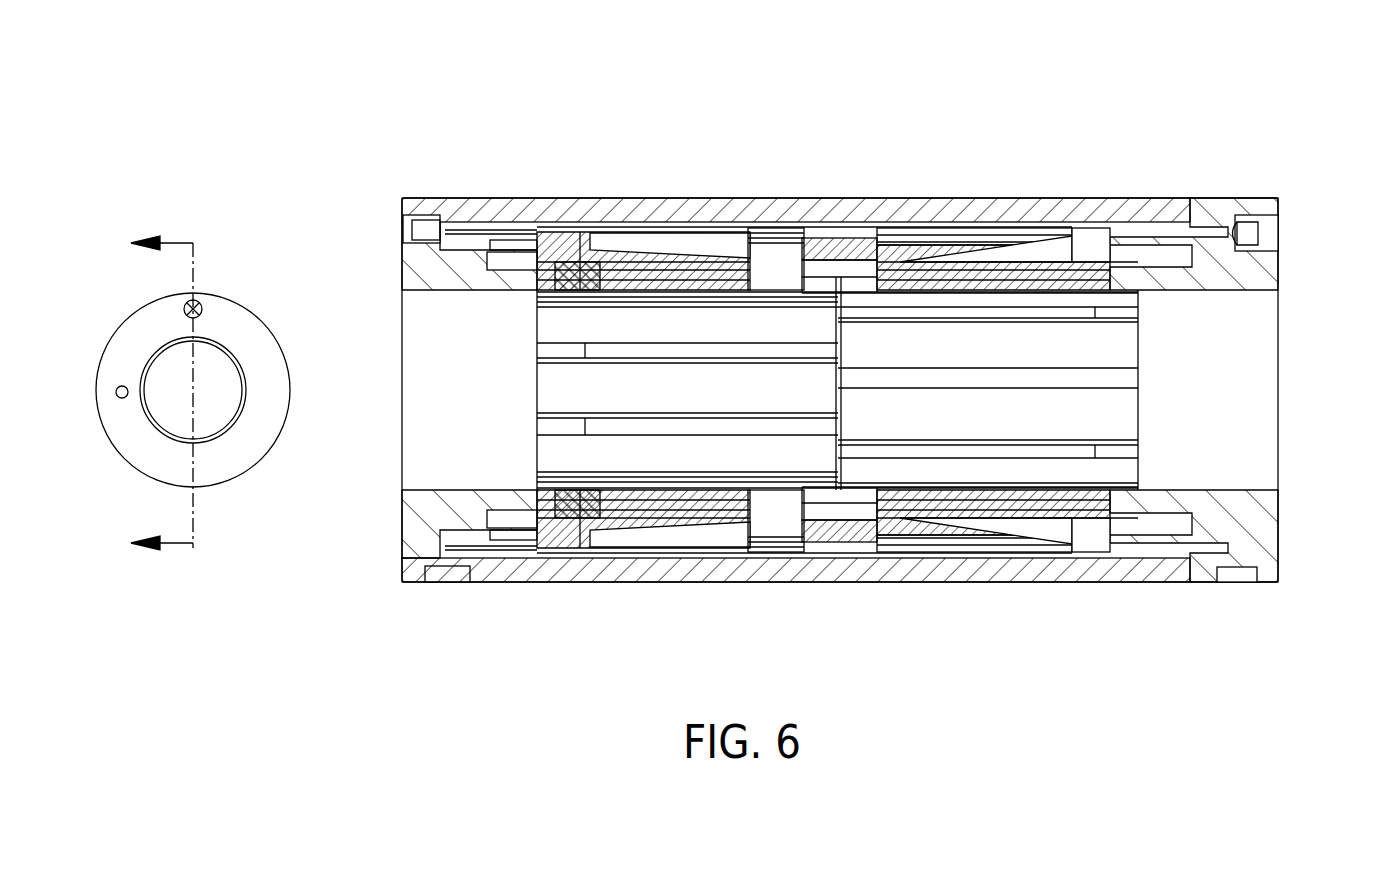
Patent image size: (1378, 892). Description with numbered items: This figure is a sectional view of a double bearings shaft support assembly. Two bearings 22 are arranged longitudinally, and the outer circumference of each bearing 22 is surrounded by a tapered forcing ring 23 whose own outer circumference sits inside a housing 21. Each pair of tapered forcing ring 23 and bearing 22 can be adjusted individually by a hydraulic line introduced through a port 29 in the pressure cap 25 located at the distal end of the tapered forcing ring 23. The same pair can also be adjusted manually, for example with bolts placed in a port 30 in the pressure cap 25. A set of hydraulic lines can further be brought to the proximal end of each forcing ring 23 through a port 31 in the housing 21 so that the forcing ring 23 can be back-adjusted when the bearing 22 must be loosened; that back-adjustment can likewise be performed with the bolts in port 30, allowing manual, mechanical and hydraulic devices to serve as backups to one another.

The housing 21 is at (658, 208).
The port 31 is at (822, 197).
The bearing 22 is at (932, 258).
The tapered forcing ring 23 is at (1025, 248).
The port 29 is at (1270, 230).
The pressure cap 25 is at (1252, 325).
The port 30 is at (263, 387).